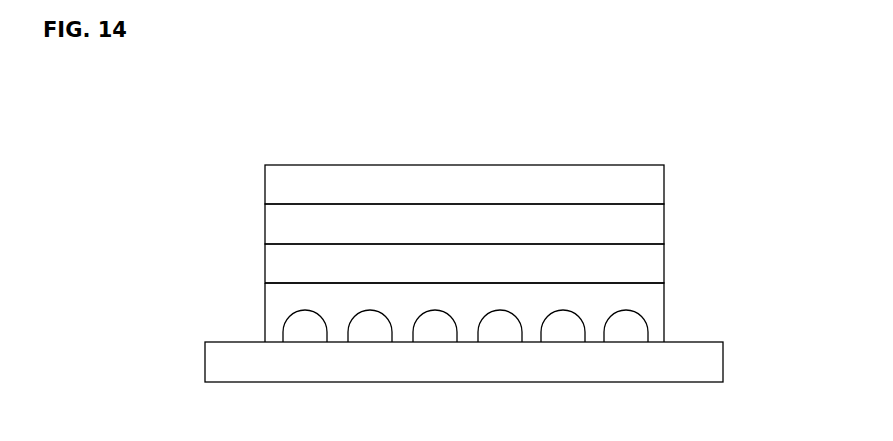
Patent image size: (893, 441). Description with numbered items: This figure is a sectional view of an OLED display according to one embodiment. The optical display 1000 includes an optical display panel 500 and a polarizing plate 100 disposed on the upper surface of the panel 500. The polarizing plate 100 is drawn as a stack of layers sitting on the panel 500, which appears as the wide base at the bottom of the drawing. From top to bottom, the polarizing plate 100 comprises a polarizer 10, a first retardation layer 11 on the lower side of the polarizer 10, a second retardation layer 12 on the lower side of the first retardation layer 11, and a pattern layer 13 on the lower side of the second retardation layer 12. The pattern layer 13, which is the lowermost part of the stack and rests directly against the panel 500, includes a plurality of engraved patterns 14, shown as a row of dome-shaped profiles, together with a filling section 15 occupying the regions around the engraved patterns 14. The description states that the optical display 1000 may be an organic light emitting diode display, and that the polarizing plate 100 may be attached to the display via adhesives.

The optical display 1000 is at (673, 140).
The polarizing plate 100 is at (666, 165).
The polarizer 10 is at (280, 188).
The first retardation layer 11 is at (280, 227).
The second retardation layer 12 is at (280, 265).
The pattern layer 13 is at (280, 303).
The engraved patterns 14 is at (303, 312).
The filling section 15 is at (433, 330).
The optical display panel 500 is at (223, 364).